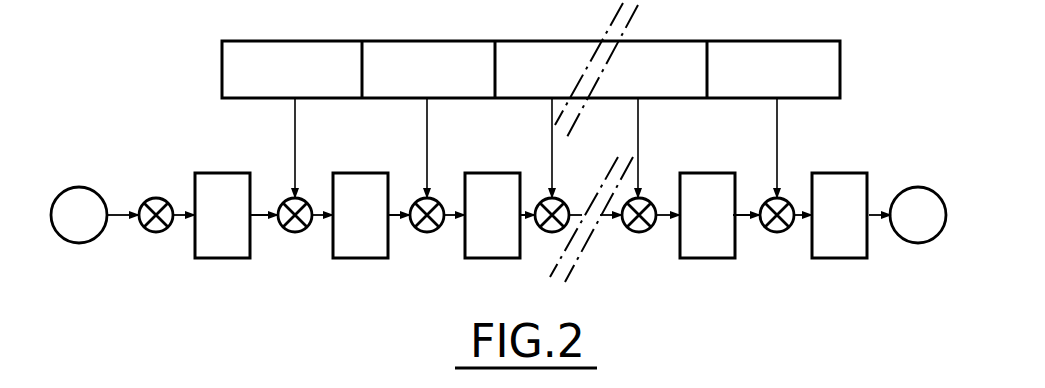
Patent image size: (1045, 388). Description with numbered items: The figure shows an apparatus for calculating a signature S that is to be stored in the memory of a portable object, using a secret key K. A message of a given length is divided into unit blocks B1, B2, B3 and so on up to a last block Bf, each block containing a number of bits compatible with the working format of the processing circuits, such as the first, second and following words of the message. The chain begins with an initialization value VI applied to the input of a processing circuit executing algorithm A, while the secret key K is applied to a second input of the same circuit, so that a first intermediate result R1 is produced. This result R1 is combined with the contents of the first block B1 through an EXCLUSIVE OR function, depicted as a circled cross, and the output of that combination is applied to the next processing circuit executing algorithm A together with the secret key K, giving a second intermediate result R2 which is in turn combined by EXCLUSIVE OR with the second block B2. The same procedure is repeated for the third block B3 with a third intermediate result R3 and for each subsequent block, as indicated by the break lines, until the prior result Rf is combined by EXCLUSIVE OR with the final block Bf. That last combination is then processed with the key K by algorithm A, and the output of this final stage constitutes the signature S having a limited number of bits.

The initialization value VI is at (79, 215).
The signature S is at (918, 215).
The algorithm A is at (531, 215).
The secret key K is at (531, 148).
The first block B1 is at (290, 126).
The second block B2 is at (423, 126).
The third block B3 is at (555, 126).
The last block Bf is at (768, 126).
The first intermediate result R1 is at (257, 217).
The second intermediate result R2 is at (396, 217).
The third intermediate result R3 is at (527, 217).
The prior result Rf is at (742, 217).